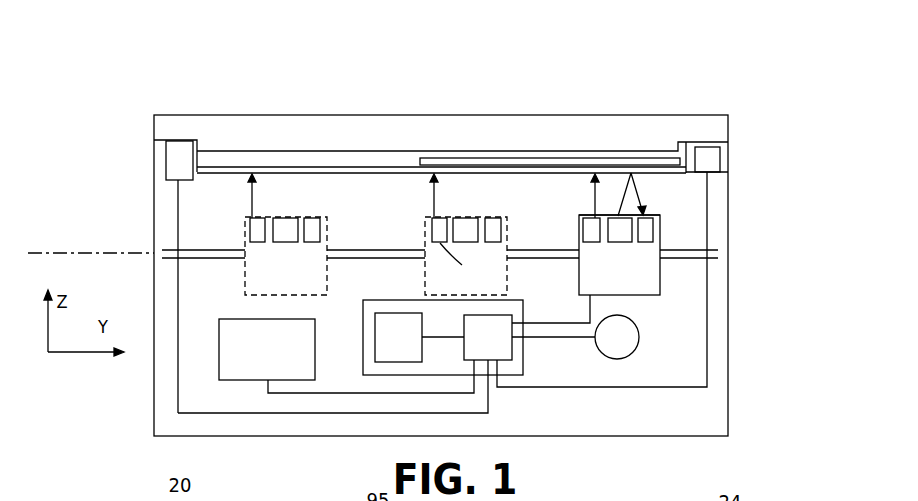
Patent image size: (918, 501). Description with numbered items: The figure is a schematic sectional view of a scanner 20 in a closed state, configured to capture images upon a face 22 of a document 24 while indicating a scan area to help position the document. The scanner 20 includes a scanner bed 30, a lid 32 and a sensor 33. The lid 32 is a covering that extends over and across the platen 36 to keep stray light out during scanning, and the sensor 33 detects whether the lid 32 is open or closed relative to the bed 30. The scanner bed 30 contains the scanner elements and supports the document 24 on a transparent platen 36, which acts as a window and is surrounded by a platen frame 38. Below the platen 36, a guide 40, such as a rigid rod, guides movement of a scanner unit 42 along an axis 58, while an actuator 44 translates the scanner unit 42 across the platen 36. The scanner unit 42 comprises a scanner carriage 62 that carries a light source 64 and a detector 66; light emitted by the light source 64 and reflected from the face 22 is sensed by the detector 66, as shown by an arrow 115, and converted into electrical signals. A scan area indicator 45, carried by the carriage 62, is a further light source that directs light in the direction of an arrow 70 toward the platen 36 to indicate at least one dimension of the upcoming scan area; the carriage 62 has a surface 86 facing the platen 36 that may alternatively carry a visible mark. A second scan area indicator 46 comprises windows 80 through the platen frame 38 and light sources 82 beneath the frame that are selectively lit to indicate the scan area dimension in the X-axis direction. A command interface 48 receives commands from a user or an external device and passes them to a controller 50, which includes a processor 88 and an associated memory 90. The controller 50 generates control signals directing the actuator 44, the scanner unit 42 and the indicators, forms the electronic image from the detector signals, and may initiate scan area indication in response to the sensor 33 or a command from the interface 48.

The scanner 20 is at (268, 96).
The face 22 is at (537, 166).
The document 24 is at (594, 144).
The scanner bed 30 is at (146, 150).
The lid 32 is at (172, 114).
The sensor 33 is at (722, 163).
The platen 36 is at (326, 171).
The platen frame 38 is at (733, 143).
The guide 40 is at (212, 248).
The scanner unit 42 is at (668, 236).
The actuator 44 is at (632, 353).
The scan area indicator 45 is at (275, 243).
The scan area indicator 46 is at (158, 163).
The command interface 48 is at (220, 335).
The controller 50 is at (363, 345).
The axis 58 is at (80, 252).
The scanner carriage 62 is at (640, 295).
The light source 64 is at (622, 243).
The detector 66 is at (646, 243).
The arrow 70 is at (436, 200).
The windows 80 is at (175, 140).
The light sources 82 is at (165, 181).
The surface 86 is at (590, 214).
The processor 88 is at (512, 352).
The memory 90 is at (400, 313).
The arrow 115 is at (640, 190).